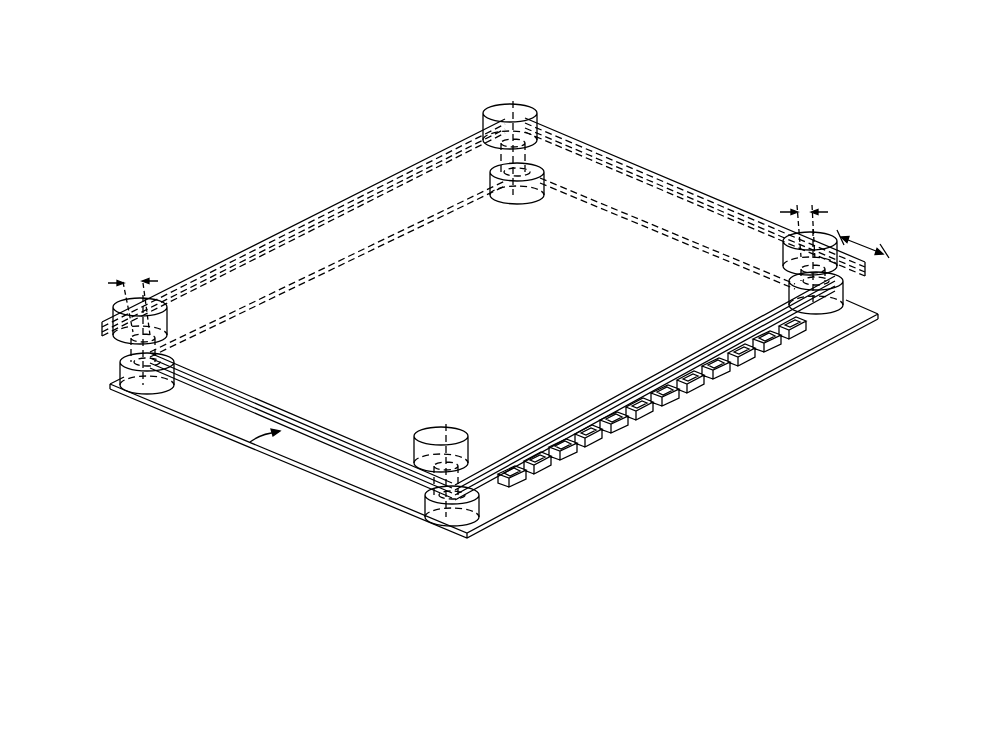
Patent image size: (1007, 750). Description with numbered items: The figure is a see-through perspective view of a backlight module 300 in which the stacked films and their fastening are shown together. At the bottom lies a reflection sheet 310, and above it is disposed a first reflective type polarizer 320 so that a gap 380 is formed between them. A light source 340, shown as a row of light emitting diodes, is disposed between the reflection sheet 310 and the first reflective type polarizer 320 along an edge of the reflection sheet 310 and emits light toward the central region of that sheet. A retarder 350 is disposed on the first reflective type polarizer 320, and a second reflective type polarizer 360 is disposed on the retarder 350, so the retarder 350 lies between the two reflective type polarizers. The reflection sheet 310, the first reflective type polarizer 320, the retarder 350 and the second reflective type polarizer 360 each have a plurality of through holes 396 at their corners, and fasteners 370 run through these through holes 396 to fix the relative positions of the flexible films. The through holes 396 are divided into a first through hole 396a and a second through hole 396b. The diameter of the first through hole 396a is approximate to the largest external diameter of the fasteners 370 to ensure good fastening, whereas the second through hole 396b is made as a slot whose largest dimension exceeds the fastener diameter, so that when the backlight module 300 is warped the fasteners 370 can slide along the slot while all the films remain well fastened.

The backlight module 300 is at (783, 614).
The reflection sheet 310 is at (313, 474).
The first reflective type polarizer 320 is at (122, 344).
The light source 340 is at (785, 346).
The retarder 350 is at (101, 329).
The second reflective type polarizer 360 is at (102, 323).
The fasteners 370 is at (120, 356).
The gap 380 is at (258, 438).
The through holes 396 is at (478, 263).
The first through hole 396a is at (547, 125).
The second through hole 396b is at (787, 268).